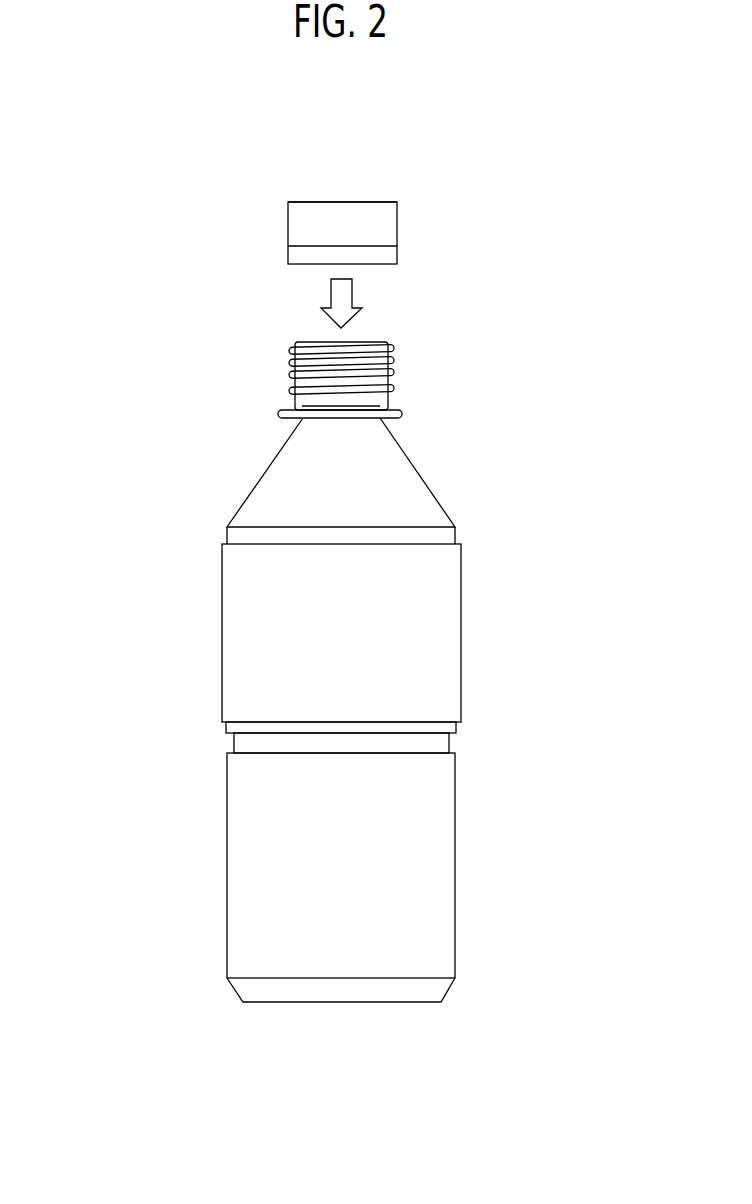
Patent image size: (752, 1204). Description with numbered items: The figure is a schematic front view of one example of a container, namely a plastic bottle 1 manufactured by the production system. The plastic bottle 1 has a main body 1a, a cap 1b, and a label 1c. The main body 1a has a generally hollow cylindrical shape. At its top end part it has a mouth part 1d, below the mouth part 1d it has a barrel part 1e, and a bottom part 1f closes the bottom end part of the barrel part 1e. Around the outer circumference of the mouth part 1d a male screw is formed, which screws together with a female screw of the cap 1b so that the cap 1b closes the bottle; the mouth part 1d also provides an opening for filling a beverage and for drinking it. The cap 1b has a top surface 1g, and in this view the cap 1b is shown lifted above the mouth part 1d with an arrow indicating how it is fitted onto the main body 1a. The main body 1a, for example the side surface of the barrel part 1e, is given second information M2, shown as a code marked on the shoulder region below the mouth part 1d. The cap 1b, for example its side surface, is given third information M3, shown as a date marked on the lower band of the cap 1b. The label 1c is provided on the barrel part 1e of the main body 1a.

The plastic bottle 1 is at (66, 170).
The main body 1a is at (472, 505).
The cap 1b is at (313, 232).
The label 1c is at (222, 632).
The mouth part 1d is at (303, 340).
The barrel part 1e is at (265, 512).
The bottom part 1f is at (262, 1005).
The top surface of the cap 1g is at (367, 202).
The second information M2 is at (313, 443).
The third information M3 is at (383, 256).